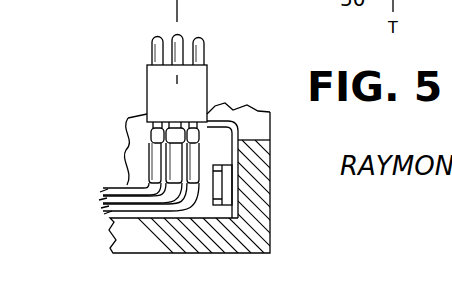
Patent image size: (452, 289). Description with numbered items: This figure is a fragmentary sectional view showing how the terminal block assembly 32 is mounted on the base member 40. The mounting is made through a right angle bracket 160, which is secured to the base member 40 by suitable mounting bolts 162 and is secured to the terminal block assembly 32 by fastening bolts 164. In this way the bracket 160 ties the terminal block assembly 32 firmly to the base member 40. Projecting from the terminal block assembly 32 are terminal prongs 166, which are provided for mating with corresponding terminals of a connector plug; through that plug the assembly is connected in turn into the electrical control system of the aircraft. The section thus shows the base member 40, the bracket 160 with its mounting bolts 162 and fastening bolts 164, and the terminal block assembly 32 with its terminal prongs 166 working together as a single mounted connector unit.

The terminal block assembly 32 is at (146, 85).
The base member 40 is at (269, 225).
The right angle bracket 160 is at (227, 117).
The mounting bolts 162 is at (221, 183).
The fastening bolts 164 is at (150, 133).
The terminal prongs 166 is at (150, 40).